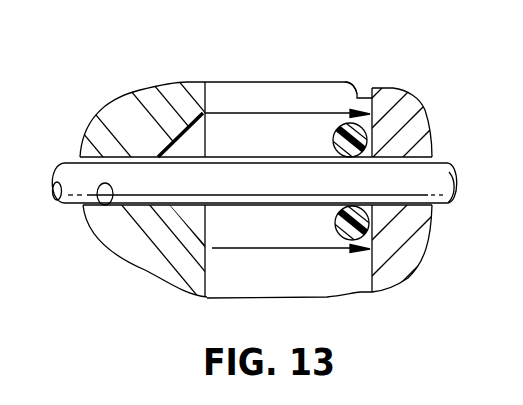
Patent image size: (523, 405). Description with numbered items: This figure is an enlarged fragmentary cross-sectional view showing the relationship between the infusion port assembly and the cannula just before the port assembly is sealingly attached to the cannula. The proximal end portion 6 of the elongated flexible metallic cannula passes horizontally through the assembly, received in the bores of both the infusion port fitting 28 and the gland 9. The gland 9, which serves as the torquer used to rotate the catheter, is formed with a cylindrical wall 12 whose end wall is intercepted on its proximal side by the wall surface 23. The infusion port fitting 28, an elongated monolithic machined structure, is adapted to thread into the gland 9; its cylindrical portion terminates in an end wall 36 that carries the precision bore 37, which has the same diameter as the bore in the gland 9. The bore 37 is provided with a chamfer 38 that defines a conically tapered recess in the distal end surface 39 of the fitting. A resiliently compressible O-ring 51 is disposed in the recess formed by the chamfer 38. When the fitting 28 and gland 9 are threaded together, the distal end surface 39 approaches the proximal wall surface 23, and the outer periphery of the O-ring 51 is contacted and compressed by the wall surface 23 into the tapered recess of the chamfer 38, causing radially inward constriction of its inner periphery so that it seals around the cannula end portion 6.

The proximal end portion 6 is at (60, 170).
The gland 9 is at (415, 268).
The cylindrical wall 12 is at (400, 100).
The wall surface 23 is at (360, 97).
The infusion port fitting 28 is at (182, 291).
The end wall 36 is at (133, 118).
The precision bore 37 is at (104, 205).
The chamfer 38 is at (187, 133).
The distal end surface 39 is at (212, 90).
The O-ring 51 is at (350, 128).